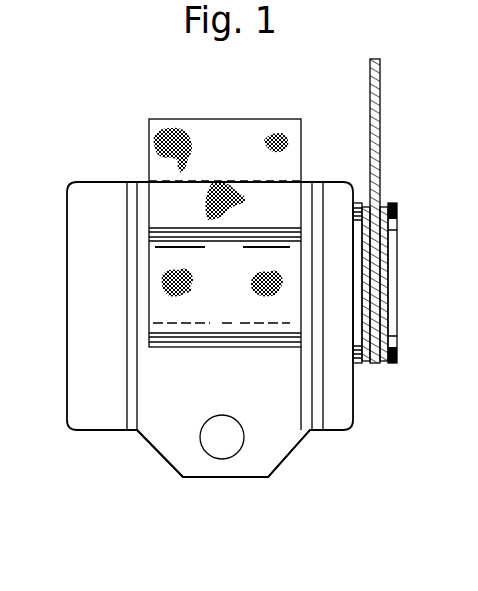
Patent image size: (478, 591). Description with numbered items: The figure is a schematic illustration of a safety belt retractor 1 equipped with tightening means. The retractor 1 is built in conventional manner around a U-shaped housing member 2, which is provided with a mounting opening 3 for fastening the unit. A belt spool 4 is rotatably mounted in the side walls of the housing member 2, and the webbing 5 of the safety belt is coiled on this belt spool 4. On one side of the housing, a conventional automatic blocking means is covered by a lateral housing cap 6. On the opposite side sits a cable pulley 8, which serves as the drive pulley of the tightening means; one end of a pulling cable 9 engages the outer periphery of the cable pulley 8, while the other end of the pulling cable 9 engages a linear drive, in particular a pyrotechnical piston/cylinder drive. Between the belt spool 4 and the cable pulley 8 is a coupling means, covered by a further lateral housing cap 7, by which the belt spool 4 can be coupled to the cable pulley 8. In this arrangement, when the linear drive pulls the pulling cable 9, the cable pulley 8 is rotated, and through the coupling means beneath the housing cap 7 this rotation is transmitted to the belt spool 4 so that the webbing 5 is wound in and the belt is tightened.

The safety belt retractor 1 is at (133, 449).
The U-shaped housing member 2 is at (293, 434).
The mounting opening 3 is at (225, 447).
The belt spool 4 is at (141, 307).
The webbing 5 is at (237, 133).
The lateral housing cap 6 is at (75, 203).
The lateral housing cap 7 is at (333, 196).
The cable pulley 8 is at (395, 233).
The pulling cable 9 is at (380, 84).